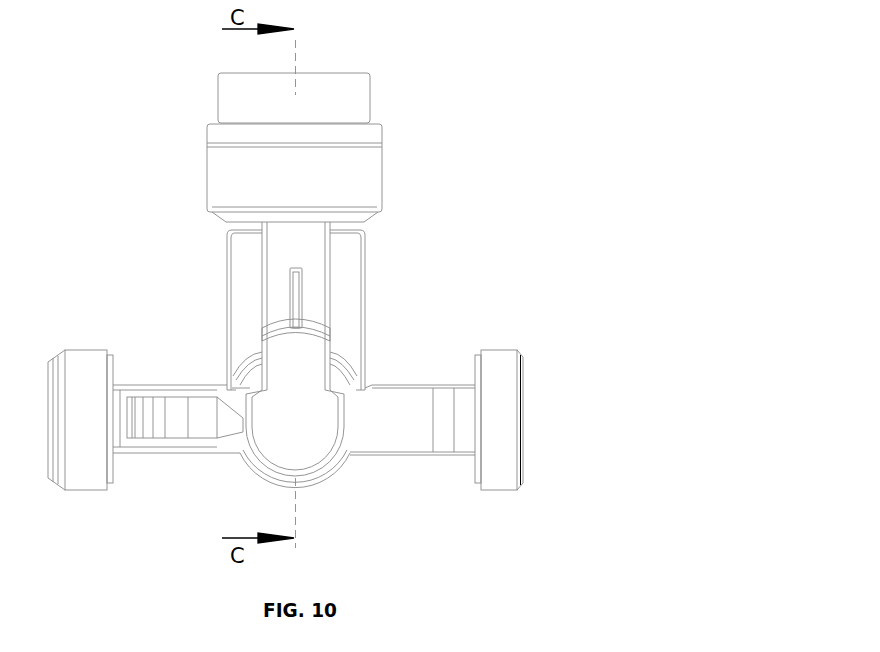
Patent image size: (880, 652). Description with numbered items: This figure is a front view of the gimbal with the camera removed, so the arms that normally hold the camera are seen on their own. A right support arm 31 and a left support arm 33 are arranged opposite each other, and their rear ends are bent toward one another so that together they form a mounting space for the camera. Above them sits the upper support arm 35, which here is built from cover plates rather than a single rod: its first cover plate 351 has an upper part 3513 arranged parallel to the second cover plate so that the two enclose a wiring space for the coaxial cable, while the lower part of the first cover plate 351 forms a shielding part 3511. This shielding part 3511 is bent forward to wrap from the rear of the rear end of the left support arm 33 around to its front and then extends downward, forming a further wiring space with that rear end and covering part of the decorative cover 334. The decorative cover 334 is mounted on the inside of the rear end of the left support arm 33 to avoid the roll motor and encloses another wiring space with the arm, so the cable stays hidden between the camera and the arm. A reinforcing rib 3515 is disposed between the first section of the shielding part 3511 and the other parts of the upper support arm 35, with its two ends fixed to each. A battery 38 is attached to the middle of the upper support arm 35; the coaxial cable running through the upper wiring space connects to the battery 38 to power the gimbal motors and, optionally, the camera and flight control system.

The right support arm 31 is at (475, 328).
The left support arm 33 is at (141, 408).
The decorative cover 334 is at (178, 428).
The upper support arm 35 is at (416, 120).
The first cover plate 351 is at (218, 306).
The shielding part 3511 is at (300, 348).
The upper part of the first cover plate 3513 is at (295, 252).
The reinforcing rib 3515 is at (295, 292).
The battery 38 is at (353, 283).